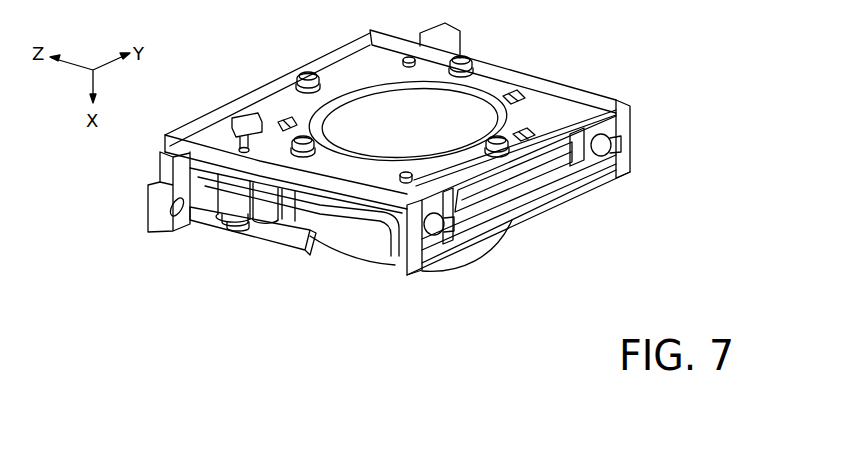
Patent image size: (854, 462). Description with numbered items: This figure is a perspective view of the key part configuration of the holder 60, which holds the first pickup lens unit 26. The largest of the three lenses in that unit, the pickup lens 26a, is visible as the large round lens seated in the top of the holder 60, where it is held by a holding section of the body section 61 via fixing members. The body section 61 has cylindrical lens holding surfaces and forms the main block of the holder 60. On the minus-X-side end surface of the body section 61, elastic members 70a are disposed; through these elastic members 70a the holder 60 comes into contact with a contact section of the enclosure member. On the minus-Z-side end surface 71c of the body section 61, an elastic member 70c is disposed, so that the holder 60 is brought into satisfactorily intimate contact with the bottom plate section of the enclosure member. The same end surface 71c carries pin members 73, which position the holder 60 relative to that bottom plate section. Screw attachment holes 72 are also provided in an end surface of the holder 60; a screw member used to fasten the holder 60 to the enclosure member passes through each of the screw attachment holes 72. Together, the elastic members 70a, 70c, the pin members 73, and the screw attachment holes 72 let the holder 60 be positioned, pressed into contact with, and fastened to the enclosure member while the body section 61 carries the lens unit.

The first pickup lens unit 26 is at (412, 95).
The pickup lens 26a is at (410, 123).
The holder 60 is at (638, 108).
The body section 61 is at (157, 201).
The elastic members 70a is at (538, 80).
The elastic member 70c is at (527, 208).
The −Z-side end surface 71c is at (597, 156).
The screw attachment holes 72 is at (182, 218).
The pin members 73 is at (618, 148).